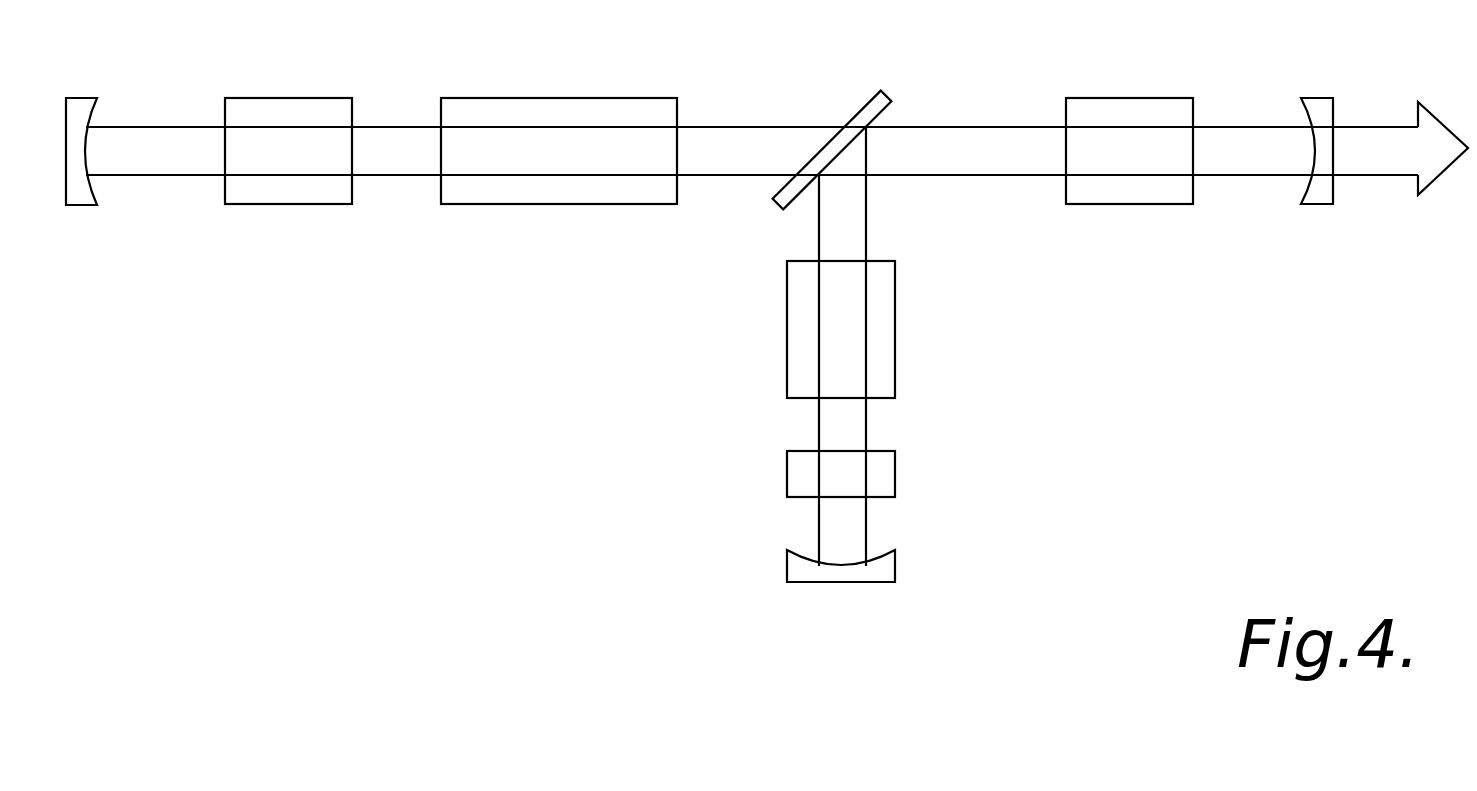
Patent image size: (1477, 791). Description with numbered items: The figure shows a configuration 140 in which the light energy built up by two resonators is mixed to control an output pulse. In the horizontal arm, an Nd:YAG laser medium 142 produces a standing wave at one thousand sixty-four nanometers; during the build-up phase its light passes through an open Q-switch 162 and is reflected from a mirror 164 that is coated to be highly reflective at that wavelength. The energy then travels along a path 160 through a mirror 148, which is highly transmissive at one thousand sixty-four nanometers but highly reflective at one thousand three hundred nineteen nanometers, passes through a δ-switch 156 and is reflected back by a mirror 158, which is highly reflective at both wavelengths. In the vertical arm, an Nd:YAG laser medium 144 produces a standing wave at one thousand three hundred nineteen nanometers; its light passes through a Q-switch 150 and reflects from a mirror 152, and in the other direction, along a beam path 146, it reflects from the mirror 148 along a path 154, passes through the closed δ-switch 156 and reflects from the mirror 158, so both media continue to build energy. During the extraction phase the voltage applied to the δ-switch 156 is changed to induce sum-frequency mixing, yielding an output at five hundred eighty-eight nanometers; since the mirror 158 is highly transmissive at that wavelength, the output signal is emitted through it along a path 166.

The configuration 140 is at (304, 440).
The Nd:YAG laser medium 142 is at (557, 205).
The Nd:YAG laser medium 144 is at (897, 329).
The second resonator arm beam path 146 is at (850, 213).
The mirror 148 is at (885, 97).
The Q-switch 150 is at (787, 473).
The mirror 152 is at (897, 566).
The path 154 is at (980, 140).
The δ-switch 156 is at (1130, 98).
The mirror 158 is at (1315, 98).
The path 160 is at (752, 140).
The Q-switch 162 is at (288, 98).
The mirror 164 is at (83, 98).
The path 166 is at (1385, 140).